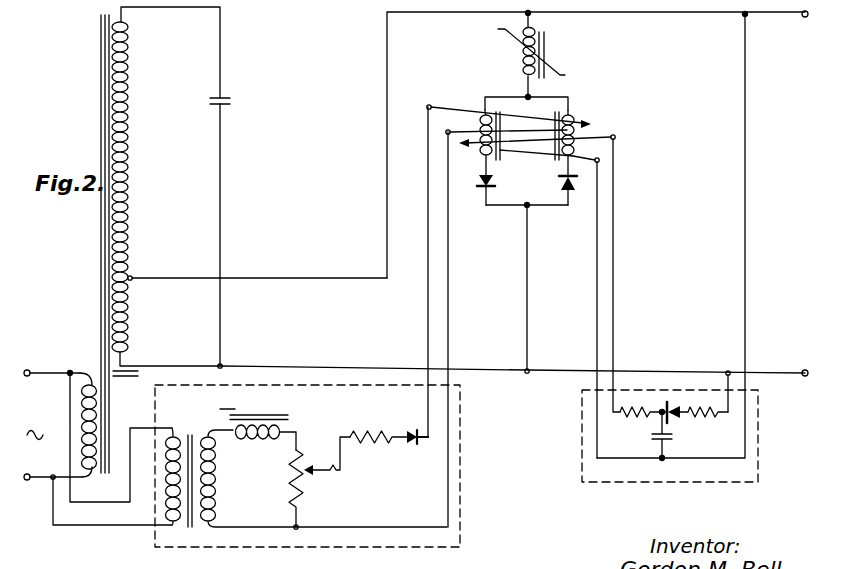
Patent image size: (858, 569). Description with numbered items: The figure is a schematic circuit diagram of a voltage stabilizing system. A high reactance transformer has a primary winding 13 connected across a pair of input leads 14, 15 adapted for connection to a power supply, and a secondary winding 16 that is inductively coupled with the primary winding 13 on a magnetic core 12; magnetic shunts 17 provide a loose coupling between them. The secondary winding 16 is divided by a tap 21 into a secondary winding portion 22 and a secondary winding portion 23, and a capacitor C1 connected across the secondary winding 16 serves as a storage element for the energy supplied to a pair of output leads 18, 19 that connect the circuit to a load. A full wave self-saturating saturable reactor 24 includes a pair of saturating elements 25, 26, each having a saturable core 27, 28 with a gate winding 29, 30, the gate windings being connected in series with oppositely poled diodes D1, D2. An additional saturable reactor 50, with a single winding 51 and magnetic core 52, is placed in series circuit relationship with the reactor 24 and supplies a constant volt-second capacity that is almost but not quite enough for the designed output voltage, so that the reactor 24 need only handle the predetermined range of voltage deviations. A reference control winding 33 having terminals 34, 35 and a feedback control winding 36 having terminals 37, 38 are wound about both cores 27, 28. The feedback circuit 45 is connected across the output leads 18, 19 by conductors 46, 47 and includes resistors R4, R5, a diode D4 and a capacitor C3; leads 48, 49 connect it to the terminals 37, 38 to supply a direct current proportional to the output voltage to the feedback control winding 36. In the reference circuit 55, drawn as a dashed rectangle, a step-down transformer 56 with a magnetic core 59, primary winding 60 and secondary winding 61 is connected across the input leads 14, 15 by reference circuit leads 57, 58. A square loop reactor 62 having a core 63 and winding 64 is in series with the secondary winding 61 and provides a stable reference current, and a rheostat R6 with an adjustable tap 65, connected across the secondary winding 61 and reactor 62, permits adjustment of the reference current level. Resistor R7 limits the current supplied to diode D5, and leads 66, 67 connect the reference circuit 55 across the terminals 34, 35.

The magnetic core 12 is at (100, 127).
The primary winding 13 is at (85, 420).
The input lead 14 is at (52, 371).
The input lead 15 is at (43, 480).
The secondary winding 16 is at (131, 125).
The magnetic shunts 17 is at (132, 379).
The output lead 18 is at (712, 15).
The output lead 19 is at (768, 372).
The tap 21 is at (134, 276).
The secondary winding portion 22 is at (129, 314).
The secondary winding portion 23 is at (129, 204).
The full wave self-saturating saturable reactor 24 is at (550, 97).
The saturating element 25 is at (480, 96).
The saturating element 26 is at (586, 112).
The saturable core 27 is at (504, 158).
The saturable core 28 is at (553, 160).
The gate winding 29 is at (481, 123).
The gate winding 30 is at (573, 148).
The reference control winding 33 is at (448, 107).
The terminal 34 is at (428, 109).
The terminal 35 is at (446, 133).
The feedback control winding 36 is at (597, 136).
The terminal 37 is at (615, 137).
The terminal 38 is at (599, 161).
The feedback circuit 45 is at (760, 425).
The conductor 46 is at (747, 193).
The conductor 47 is at (727, 381).
The lead 48 is at (595, 303).
The lead 49 is at (614, 307).
The additional saturable reactor 50 is at (537, 26).
The winding 51 is at (523, 60).
The magnetic core 52 is at (548, 51).
The reference circuit 55 is at (463, 432).
The step-down transformer 56 is at (214, 508).
The reference circuit lead 57 is at (102, 526).
The reference circuit lead 58 is at (95, 502).
The magnetic core 59 is at (190, 434).
The primary winding 60 is at (165, 472).
The secondary winding 61 is at (216, 471).
The square loop reactor 62 is at (288, 424).
The core 63 is at (265, 413).
The winding 64 is at (248, 432).
The adjustable tap 65 is at (309, 466).
The lead 66 is at (427, 317).
The lead 67 is at (450, 337).
The capacitor C1 is at (231, 102).
The capacitor C3 is at (652, 438).
The diode D1 is at (481, 190).
The diode D2 is at (578, 190).
The diode D4 is at (670, 422).
The diode D5 is at (419, 442).
The resistor R4 is at (698, 420).
The resistor R5 is at (635, 418).
The rheostat R6 is at (301, 486).
The resistor R7 is at (372, 428).